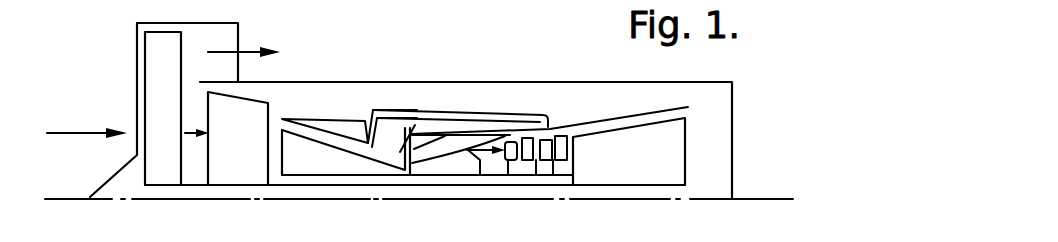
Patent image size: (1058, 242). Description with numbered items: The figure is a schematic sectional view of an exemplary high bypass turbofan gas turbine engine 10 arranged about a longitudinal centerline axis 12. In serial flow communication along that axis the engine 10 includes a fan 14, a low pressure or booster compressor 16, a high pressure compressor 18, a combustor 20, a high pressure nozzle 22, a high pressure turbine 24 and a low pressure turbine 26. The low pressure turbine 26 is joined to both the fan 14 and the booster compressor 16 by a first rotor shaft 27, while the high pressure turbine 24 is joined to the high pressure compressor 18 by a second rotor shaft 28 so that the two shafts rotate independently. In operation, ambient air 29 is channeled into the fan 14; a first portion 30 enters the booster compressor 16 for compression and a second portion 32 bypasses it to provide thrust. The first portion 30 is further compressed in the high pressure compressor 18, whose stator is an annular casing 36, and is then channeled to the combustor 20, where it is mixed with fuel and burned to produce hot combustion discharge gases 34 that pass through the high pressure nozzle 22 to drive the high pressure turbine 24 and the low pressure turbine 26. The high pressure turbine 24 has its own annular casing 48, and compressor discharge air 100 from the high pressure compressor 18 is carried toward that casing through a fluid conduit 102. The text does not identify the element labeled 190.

The high bypass turbofan gas turbine engine 10 is at (458, 64).
The longitudinal centerline axis 12 is at (768, 197).
The fan 14 is at (158, 197).
The booster compressor 16 is at (236, 197).
The high pressure compressor 18 is at (310, 185).
The combustor 20 is at (440, 158).
The high pressure nozzle 22 is at (498, 185).
The high pressure turbine 24 is at (543, 170).
The low pressure turbine 26 is at (636, 173).
The first rotor shaft 27 is at (343, 185).
The second rotor shaft 28 is at (412, 185).
The ambient air 29 is at (83, 127).
The first portion of air 30 is at (190, 132).
The second portion of air 32 is at (253, 47).
The combustion discharge gases 34 is at (478, 185).
The annular casing 36 is at (288, 118).
The HPT annular casing 48 is at (558, 120).
The compressor discharge air 100 is at (378, 157).
The fluid conduit 102 is at (408, 110).
The cooling air duct 190 is at (438, 110).